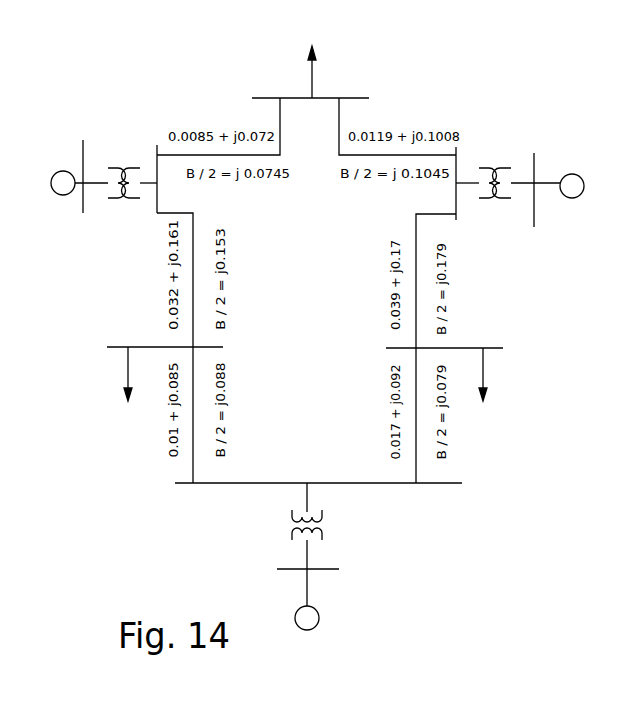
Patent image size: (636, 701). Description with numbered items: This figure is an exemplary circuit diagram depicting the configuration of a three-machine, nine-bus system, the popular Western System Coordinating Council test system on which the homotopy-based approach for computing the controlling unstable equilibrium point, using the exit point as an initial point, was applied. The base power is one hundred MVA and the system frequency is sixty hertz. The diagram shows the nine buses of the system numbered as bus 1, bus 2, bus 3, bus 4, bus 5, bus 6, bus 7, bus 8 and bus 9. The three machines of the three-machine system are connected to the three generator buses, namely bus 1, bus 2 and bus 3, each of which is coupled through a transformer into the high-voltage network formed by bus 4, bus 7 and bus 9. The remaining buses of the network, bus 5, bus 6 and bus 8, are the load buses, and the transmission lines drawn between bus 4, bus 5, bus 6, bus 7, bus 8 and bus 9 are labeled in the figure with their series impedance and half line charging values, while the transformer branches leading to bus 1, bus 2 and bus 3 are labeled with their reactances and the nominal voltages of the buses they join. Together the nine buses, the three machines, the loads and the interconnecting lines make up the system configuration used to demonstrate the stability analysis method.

The bus 1 (16.5 kV generator bus) 1 is at (299, 556).
The bus 2 (18 kV generator bus) 2 is at (104, 181).
The bus 3 (13.8 kV generator bus) 3 is at (524, 194).
The bus 4 (230 kV bus) 4 is at (318, 484).
The bus 5 (230 kV load bus) 5 is at (153, 371).
The bus 6 (230 kV load bus) 6 is at (454, 371).
The bus 7 (230 kV bus) 7 is at (148, 171).
The bus 8 (230 kV load bus) 8 is at (314, 66).
The bus 9 (230 kV bus) 9 is at (479, 197).